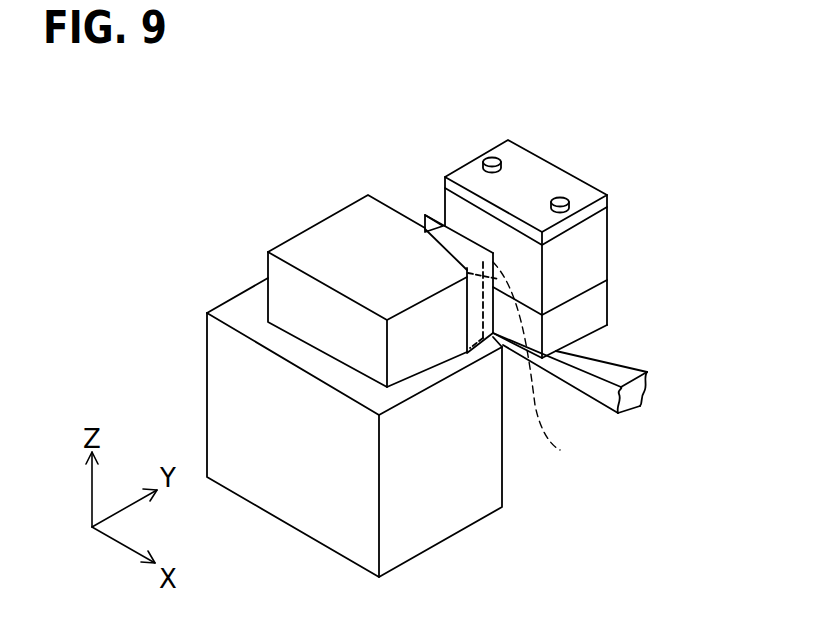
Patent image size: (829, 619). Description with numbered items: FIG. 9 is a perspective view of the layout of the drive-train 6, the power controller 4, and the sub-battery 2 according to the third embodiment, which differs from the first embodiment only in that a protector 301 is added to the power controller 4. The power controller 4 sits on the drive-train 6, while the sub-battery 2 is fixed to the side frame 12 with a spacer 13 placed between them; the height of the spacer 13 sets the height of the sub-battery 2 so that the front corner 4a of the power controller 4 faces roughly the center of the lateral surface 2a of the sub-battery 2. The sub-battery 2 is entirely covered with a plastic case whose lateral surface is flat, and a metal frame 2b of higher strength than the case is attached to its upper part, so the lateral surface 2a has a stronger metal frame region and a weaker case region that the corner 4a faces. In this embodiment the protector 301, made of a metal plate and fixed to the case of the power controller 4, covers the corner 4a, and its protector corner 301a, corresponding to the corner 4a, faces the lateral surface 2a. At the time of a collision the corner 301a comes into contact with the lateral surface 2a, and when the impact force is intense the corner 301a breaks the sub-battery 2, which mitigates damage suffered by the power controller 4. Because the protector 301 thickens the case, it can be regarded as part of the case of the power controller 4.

The sub-battery 2 is at (510, 158).
The lateral surface 2a is at (530, 262).
The metal frame 2b is at (575, 204).
The power controller 4 is at (345, 240).
The front corner 4a is at (560, 450).
The drive-train 6 is at (253, 317).
The side frame 12 is at (637, 390).
The spacer 13 is at (600, 305).
The protector 301 is at (440, 222).
The protector corner 301a is at (493, 253).